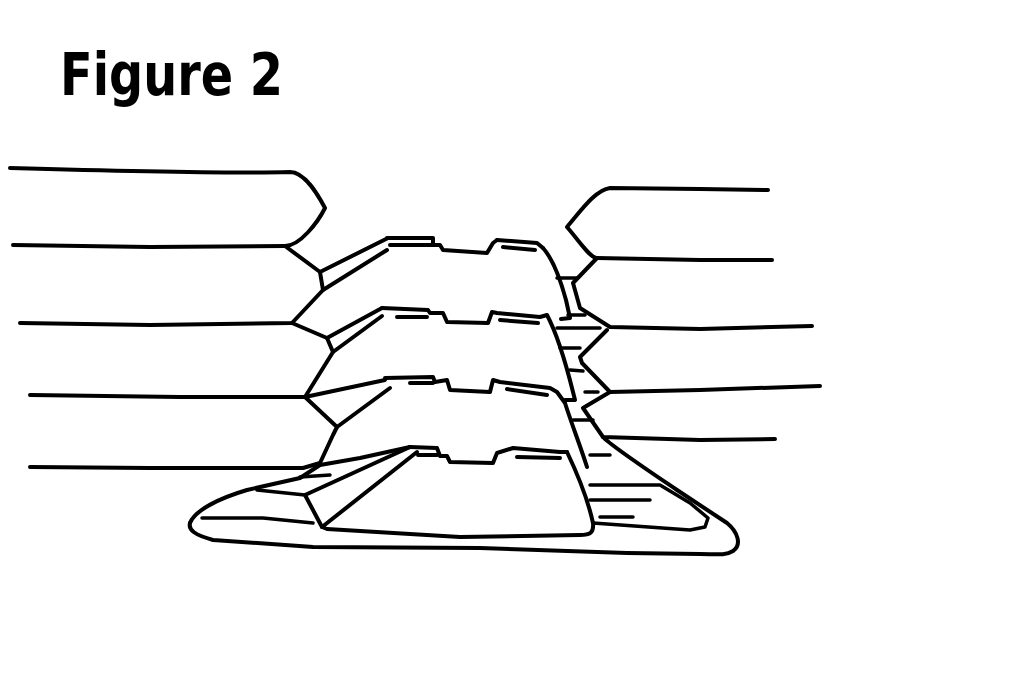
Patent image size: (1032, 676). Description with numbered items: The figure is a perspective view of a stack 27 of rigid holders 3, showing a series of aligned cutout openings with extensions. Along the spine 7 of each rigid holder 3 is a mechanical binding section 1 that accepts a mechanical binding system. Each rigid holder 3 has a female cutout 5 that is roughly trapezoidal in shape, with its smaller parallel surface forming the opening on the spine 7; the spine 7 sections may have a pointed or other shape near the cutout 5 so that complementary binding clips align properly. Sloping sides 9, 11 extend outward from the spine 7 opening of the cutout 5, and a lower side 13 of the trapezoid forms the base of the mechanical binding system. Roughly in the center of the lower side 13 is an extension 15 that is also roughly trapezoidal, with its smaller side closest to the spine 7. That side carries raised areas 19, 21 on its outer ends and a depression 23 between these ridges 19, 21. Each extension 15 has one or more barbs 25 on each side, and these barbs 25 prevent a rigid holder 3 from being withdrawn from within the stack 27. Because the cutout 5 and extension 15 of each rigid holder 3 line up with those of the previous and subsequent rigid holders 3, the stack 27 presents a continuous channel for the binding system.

The binding section 1 is at (648, 118).
The rigid holder 3 is at (775, 485).
The cutout 5 is at (353, 225).
The spine 7 is at (793, 410).
The sloping side 9 is at (240, 497).
The sloping side 11 is at (648, 468).
The lower side 13 is at (693, 540).
The extension 15 is at (410, 512).
The raised area 19 is at (438, 237).
The raised area 21 is at (503, 235).
The depression 23 is at (468, 238).
The barb 25 is at (543, 465).
The stack 27 is at (115, 535).